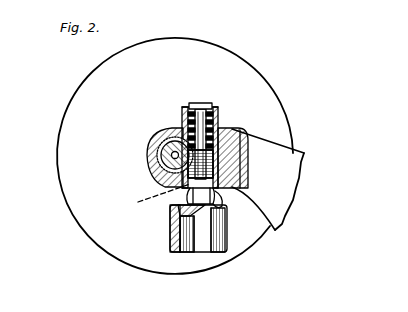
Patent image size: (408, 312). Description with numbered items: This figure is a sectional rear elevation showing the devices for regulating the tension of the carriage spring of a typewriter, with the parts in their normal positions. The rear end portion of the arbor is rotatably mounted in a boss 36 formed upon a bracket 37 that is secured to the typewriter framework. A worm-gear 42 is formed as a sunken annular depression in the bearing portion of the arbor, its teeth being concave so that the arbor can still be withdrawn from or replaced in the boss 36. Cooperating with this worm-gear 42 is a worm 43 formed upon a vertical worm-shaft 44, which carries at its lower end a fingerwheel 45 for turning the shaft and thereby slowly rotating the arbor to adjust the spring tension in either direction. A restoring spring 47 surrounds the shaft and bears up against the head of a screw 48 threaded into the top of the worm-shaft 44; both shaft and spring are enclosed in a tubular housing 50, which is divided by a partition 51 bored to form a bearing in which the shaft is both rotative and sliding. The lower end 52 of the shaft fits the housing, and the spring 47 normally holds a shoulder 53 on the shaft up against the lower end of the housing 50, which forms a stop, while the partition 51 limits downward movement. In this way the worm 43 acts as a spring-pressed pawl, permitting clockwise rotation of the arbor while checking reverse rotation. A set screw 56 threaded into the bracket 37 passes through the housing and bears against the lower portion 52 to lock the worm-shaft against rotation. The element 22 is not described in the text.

The dial plate 22 is at (61, 116).
The boss 36 is at (153, 149).
The bracket 37 is at (291, 164).
The worm-gear 42 is at (158, 147).
The worm 43 is at (213, 161).
The worm-shaft 44 is at (205, 108).
The fingerwheel 45 is at (172, 242).
The restoring spring 47 is at (184, 112).
The screw 48 is at (193, 103).
The housing 50 is at (222, 126).
The partition 51 is at (238, 148).
The lower end of the shaft 52 is at (188, 192).
The shoulder 53 is at (219, 198).
The set screw 56 is at (146, 198).